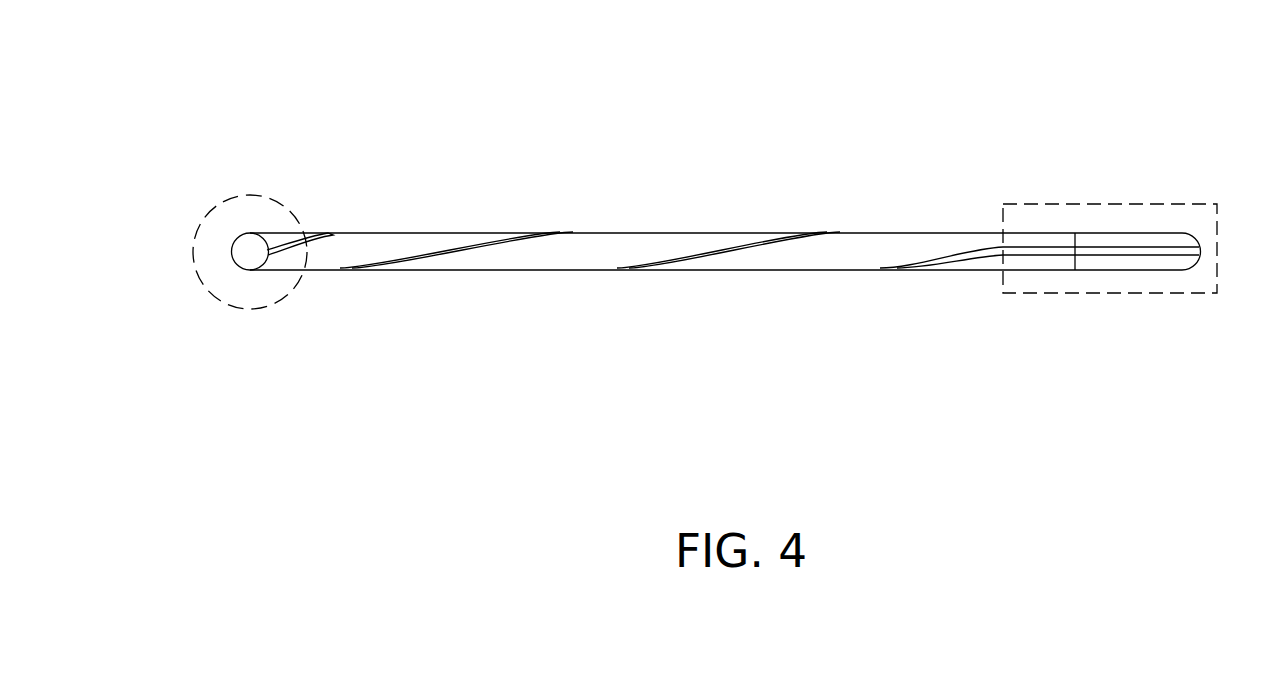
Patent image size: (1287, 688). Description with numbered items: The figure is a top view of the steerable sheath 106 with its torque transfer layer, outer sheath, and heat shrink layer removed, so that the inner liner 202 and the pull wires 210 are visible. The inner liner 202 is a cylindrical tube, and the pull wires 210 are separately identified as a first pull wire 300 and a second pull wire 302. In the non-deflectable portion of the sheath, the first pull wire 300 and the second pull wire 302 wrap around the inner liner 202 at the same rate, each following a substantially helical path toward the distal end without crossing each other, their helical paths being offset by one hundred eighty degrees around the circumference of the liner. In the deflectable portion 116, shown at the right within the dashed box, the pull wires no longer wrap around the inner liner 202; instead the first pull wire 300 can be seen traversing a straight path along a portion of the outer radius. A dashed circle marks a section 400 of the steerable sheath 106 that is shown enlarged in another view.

The steerable sheath 106 is at (701, 169).
The inner liner 202 is at (657, 233).
The pull wires 210 is at (751, 200).
The first pull wire 300 is at (498, 233).
The second pull wire 302 is at (327, 233).
The section 400 is at (282, 303).
The deflectable portion 116 is at (1108, 293).